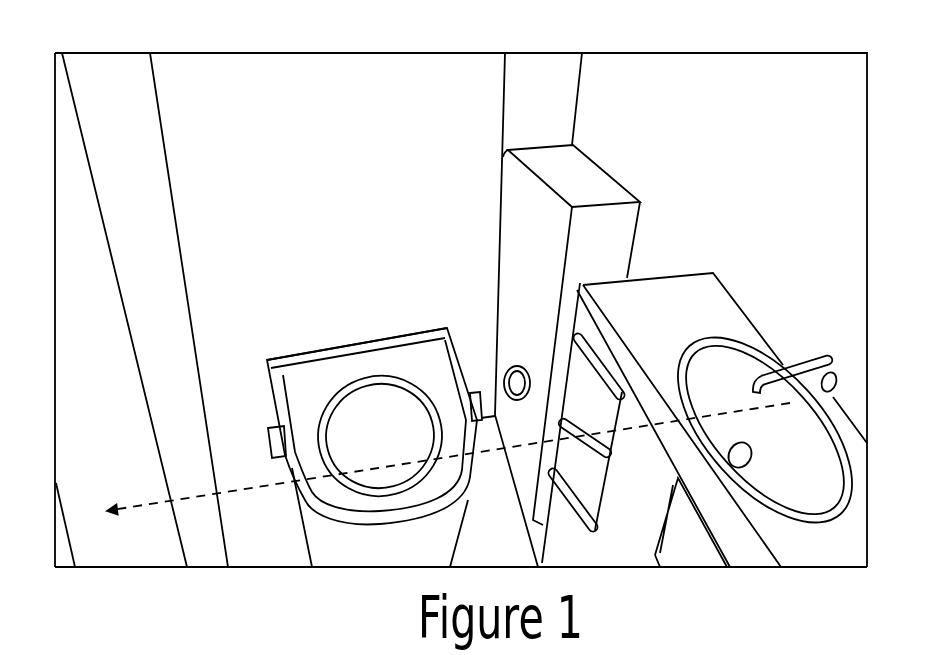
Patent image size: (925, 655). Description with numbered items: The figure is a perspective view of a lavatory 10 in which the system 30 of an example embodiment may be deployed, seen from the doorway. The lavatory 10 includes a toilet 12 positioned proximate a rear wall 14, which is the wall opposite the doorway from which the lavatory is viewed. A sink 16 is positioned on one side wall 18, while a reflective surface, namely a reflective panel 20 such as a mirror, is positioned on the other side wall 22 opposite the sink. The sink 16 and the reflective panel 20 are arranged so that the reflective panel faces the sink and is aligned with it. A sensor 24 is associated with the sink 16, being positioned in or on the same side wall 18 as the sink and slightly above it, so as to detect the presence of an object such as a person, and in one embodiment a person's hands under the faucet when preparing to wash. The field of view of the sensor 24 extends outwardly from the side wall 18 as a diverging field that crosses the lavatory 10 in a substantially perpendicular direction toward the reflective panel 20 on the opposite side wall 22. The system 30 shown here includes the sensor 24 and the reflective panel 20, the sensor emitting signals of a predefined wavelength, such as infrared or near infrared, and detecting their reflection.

The lavatory 10 is at (609, 77).
The toilet 12 is at (327, 492).
The rear wall 14 is at (370, 212).
The sink 16 is at (813, 453).
The side wall 18 is at (805, 224).
The reflective panel 20 is at (112, 542).
The other side wall 22 is at (63, 557).
The sensor 24 is at (838, 383).
The system 30 is at (817, 333).